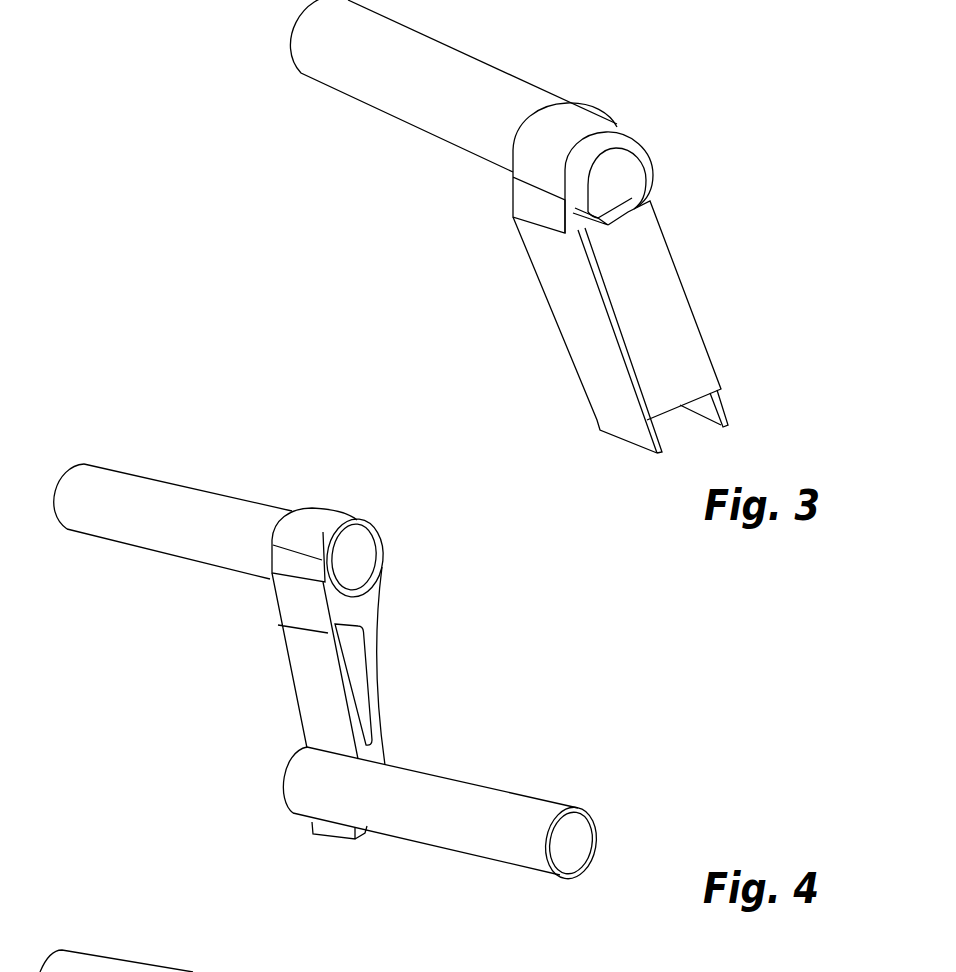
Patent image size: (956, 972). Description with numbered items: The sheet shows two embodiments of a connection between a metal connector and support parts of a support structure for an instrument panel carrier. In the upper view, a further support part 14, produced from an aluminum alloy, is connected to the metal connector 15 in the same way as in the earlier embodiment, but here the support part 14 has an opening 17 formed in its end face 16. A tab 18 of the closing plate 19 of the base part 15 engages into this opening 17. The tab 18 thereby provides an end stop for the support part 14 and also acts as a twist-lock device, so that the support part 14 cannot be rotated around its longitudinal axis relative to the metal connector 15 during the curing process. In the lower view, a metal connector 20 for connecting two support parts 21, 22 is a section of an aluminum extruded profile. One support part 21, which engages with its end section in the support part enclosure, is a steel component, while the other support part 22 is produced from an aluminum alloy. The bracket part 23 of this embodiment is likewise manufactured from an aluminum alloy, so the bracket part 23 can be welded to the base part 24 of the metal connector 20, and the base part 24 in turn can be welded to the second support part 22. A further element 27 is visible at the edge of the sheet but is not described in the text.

In FIG. 3, the support part 14 is at (428, 87).
In FIG. 3, the metal connector 15 is at (537, 329).
In FIG. 3, the end face 16 is at (648, 147).
In FIG. 3, the opening 17 is at (635, 200).
In FIG. 3, the tab 18 is at (619, 211).
In FIG. 3, the closing plate 19 is at (673, 322).
In FIG. 4, the metal connector 20 is at (395, 668).
In FIG. 4, the support part 21 is at (193, 532).
In FIG. 4, the support part 22 is at (463, 826).
In FIG. 4, the bracket part 23 is at (365, 517).
In FIG. 4, the base part 24 is at (297, 672).
In FIG. 4, the partial component 27 is at (320, 971).